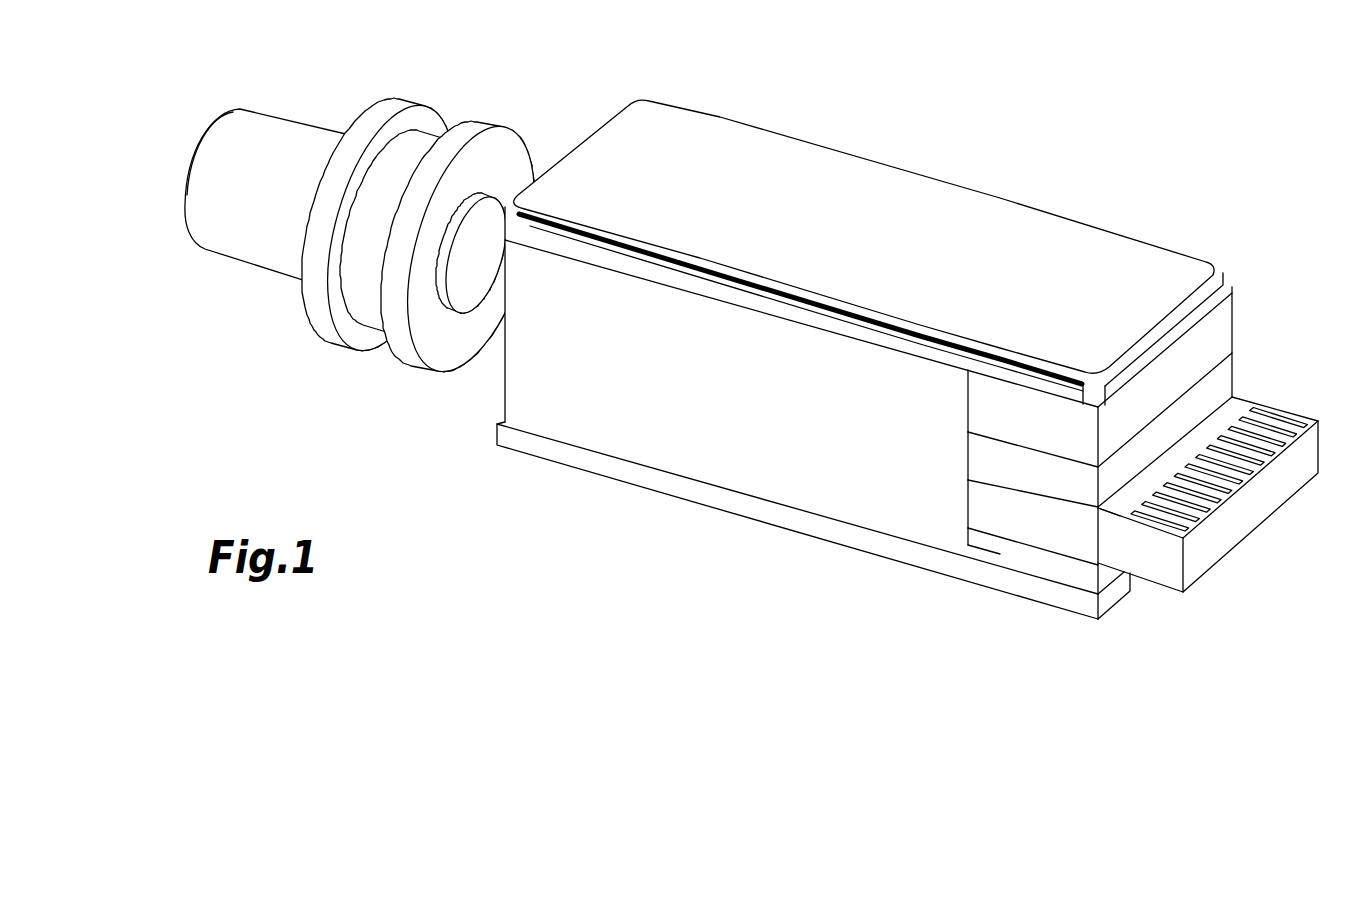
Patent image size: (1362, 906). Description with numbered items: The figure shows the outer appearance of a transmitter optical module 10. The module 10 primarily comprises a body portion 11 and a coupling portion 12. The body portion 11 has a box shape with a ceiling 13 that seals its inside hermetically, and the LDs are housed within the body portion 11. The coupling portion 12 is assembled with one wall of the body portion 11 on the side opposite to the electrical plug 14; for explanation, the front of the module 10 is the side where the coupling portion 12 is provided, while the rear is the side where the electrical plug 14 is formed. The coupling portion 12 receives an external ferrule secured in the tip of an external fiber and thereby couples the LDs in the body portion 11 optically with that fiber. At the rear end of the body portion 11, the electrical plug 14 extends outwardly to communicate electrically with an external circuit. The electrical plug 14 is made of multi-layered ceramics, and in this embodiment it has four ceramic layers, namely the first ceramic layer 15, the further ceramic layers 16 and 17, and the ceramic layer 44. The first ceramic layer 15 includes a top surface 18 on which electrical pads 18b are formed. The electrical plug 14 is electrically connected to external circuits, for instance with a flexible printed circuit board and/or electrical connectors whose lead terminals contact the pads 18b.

The transmitter optical module 10 is at (1148, 104).
The body portion 11 is at (575, 494).
The coupling portion 12 is at (450, 92).
The ceiling 13 is at (846, 160).
The electrical plug 14 is at (1292, 396).
The first ceramic layer 15 is at (983, 507).
The ceramic layer 16 is at (983, 458).
The ceramic layer 17 is at (983, 408).
The top surface 18 is at (1120, 510).
The electrical pads 18b is at (1250, 462).
The ceramic layer 44 is at (983, 540).